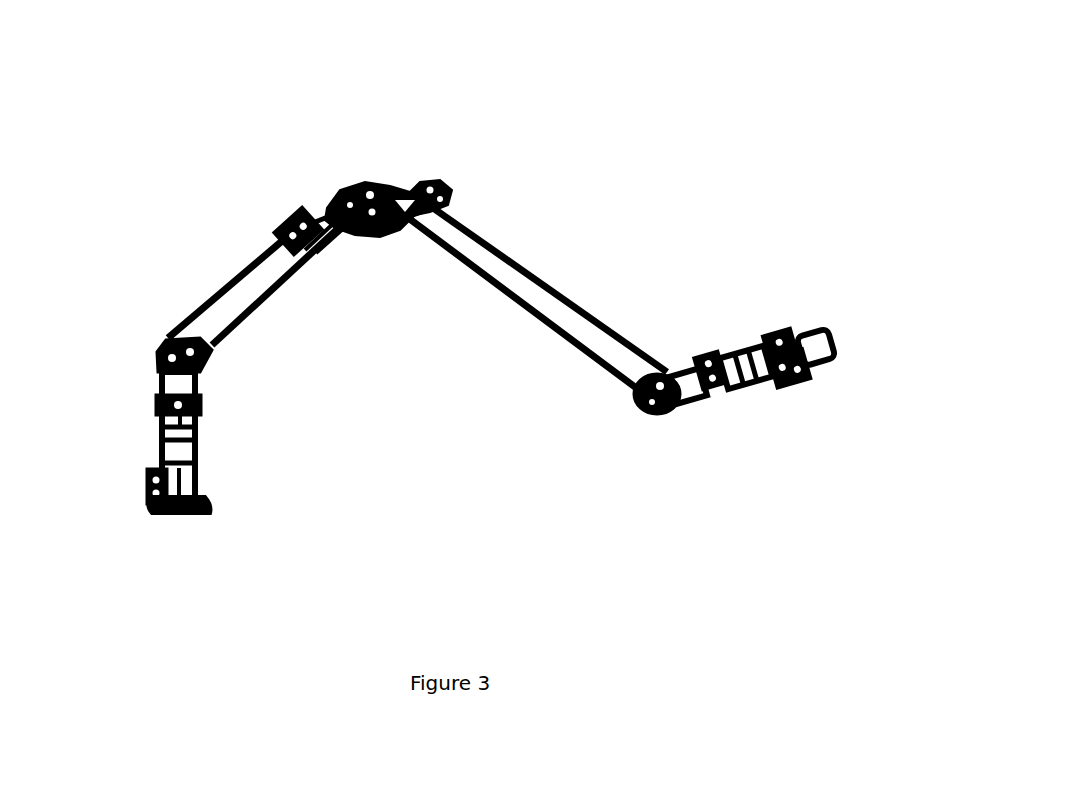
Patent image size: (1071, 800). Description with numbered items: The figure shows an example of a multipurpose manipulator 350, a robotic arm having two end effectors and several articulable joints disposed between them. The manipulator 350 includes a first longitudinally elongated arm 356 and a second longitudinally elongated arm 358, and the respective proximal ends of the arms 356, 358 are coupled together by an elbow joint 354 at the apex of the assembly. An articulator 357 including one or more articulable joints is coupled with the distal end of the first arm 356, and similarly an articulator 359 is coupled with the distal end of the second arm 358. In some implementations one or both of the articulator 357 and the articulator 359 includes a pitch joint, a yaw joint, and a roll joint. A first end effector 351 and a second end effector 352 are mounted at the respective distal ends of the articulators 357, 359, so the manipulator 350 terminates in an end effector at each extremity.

The manipulator 350 is at (217, 84).
The first end effector 351 is at (196, 518).
The second end effector 352 is at (836, 341).
The elbow joint 354 is at (368, 182).
The first longitudinally elongated arm 356 is at (253, 287).
The articulator 357 is at (135, 346).
The second longitudinally elongated arm 358 is at (547, 303).
The articulator 359 is at (847, 390).